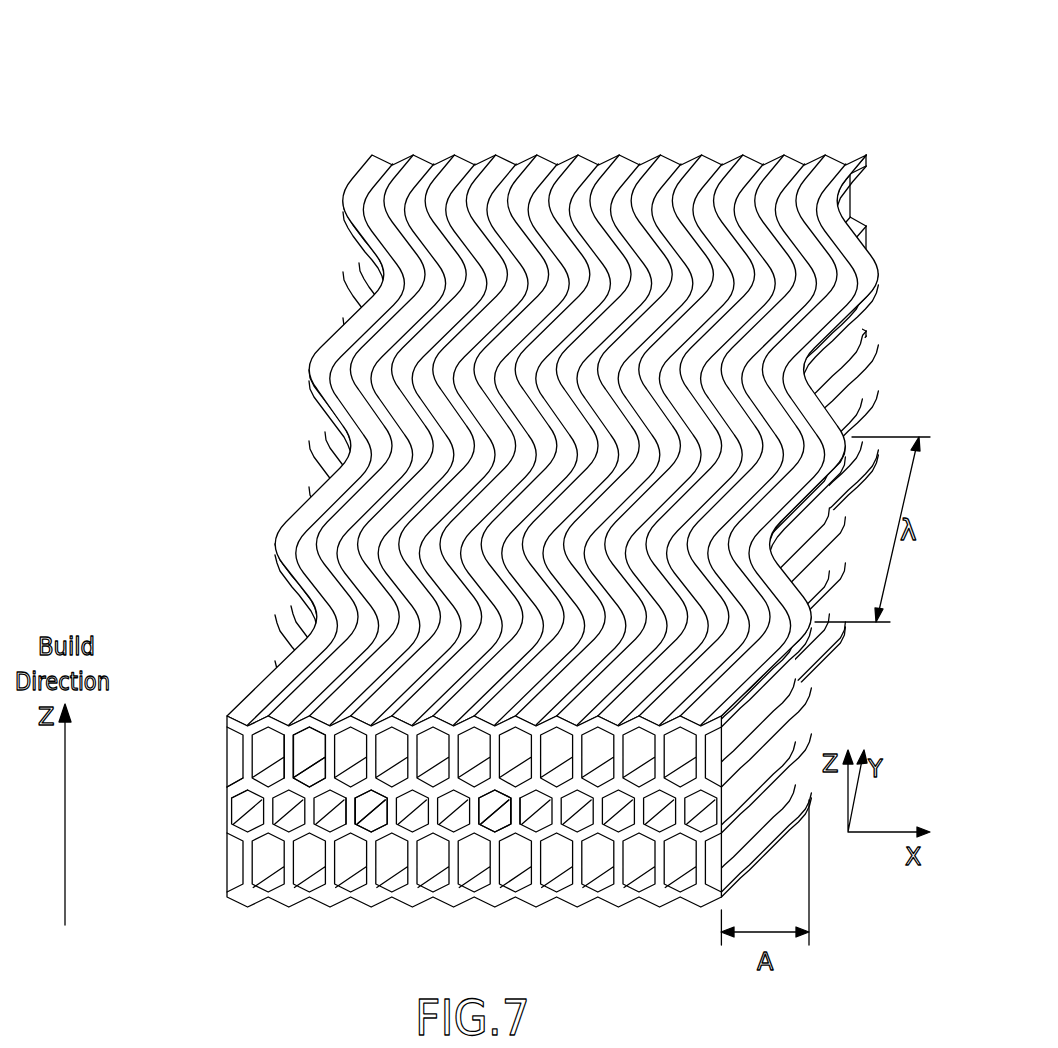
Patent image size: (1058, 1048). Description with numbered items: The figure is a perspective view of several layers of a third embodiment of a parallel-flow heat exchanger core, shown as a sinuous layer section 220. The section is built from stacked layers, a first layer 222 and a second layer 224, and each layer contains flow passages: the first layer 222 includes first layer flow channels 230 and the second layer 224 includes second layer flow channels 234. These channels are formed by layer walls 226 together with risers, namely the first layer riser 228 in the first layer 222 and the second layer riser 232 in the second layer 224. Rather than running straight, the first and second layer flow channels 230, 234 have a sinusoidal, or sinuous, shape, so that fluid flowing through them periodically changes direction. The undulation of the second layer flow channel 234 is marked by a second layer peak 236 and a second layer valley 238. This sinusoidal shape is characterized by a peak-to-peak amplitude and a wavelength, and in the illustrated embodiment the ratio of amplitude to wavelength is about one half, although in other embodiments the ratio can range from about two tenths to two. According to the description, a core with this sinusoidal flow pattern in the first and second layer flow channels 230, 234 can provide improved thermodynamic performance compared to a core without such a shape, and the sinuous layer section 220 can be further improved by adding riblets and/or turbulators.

The sinuous layer section 220 is at (497, 477).
The first layer 222 is at (228, 757).
The second layer 224 is at (228, 813).
The layer wall 226 is at (227, 797).
The first layer riser 228 is at (285, 755).
The first layer flow channel 230 is at (310, 747).
The second layer riser 232 is at (350, 810).
The second layer flow channel 234 is at (383, 813).
The second layer peak 236 is at (525, 812).
The second layer valley 238 is at (493, 820).